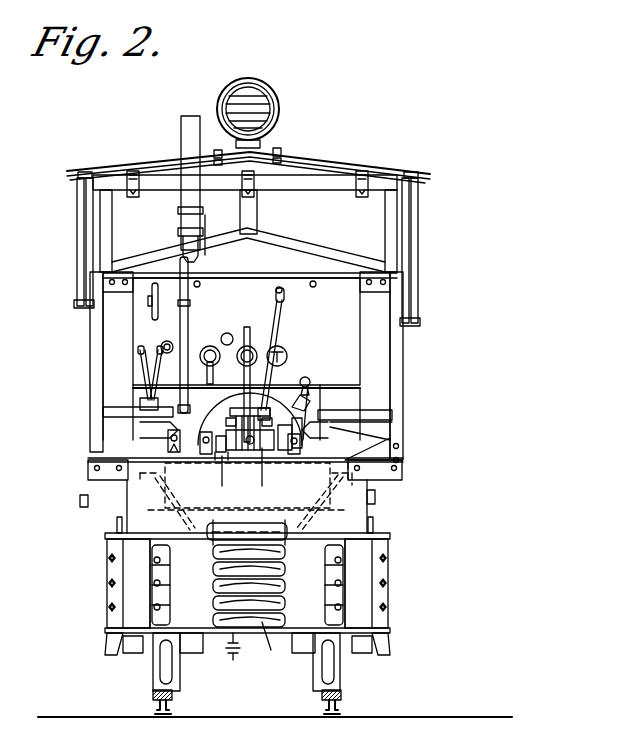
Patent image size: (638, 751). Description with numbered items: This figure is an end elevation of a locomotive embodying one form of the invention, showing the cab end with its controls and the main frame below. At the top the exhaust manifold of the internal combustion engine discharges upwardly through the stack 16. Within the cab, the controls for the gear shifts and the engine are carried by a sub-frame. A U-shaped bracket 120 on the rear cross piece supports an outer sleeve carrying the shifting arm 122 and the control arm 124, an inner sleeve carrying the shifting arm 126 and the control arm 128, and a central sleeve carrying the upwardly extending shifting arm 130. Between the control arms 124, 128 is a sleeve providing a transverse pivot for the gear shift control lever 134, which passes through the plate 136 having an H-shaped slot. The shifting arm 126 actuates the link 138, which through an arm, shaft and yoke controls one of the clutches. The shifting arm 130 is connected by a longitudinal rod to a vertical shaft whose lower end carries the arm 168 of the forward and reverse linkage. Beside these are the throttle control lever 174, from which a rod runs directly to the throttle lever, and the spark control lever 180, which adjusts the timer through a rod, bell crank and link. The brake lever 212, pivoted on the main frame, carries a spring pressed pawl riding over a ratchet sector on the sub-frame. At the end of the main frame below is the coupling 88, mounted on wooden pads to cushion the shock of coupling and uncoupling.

The stack 16 is at (190, 118).
The brake lever 212 is at (188, 314).
The throttle control lever 174 is at (140, 356).
The spark control lever 180 is at (163, 347).
The gear shift control lever 134 is at (244, 366).
The arm 168 is at (271, 395).
The plate 136 is at (250, 421).
The link 138 is at (289, 431).
The shifting arm 130 is at (180, 452).
The shifting arm 126 is at (208, 456).
The control arm 124 is at (232, 460).
The U-shaped bracket 120 is at (293, 455).
The shifting arm 122 is at (223, 479).
The control arm 128 is at (258, 475).
The coupling 88 is at (275, 645).